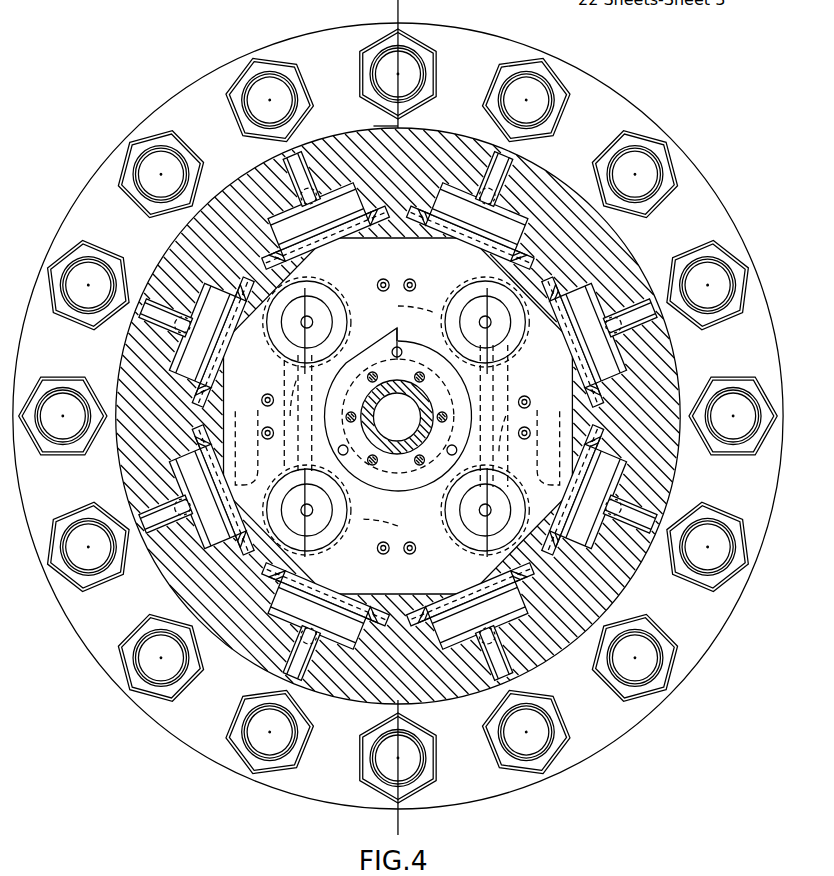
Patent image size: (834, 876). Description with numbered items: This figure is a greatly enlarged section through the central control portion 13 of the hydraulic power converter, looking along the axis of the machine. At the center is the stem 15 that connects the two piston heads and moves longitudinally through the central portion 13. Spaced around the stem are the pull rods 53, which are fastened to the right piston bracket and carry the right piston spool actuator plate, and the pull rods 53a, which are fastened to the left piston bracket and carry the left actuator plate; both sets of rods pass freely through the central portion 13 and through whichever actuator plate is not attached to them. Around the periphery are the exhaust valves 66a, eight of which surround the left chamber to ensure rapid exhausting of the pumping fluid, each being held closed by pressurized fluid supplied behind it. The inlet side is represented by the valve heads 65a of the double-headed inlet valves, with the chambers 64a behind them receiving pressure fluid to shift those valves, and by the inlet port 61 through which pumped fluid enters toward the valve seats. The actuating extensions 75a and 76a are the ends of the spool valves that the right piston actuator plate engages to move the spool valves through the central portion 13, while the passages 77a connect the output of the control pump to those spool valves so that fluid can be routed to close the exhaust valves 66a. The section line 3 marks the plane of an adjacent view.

The exhaust valve 66a is at (553, 668).
The chamber 64a is at (452, 266).
The valve head 65a is at (323, 313).
The actuating extension 76a is at (397, 328).
The stem 15 is at (396, 416).
The passage 77a is at (282, 388).
The pull rod 53 is at (368, 378).
The pull rod 53a is at (422, 378).
The actuating extension 75a is at (337, 450).
The section line 3- 3 is at (400, 3).
The central control portion 13 is at (290, 864).
The inlet port 61 is at (328, 864).